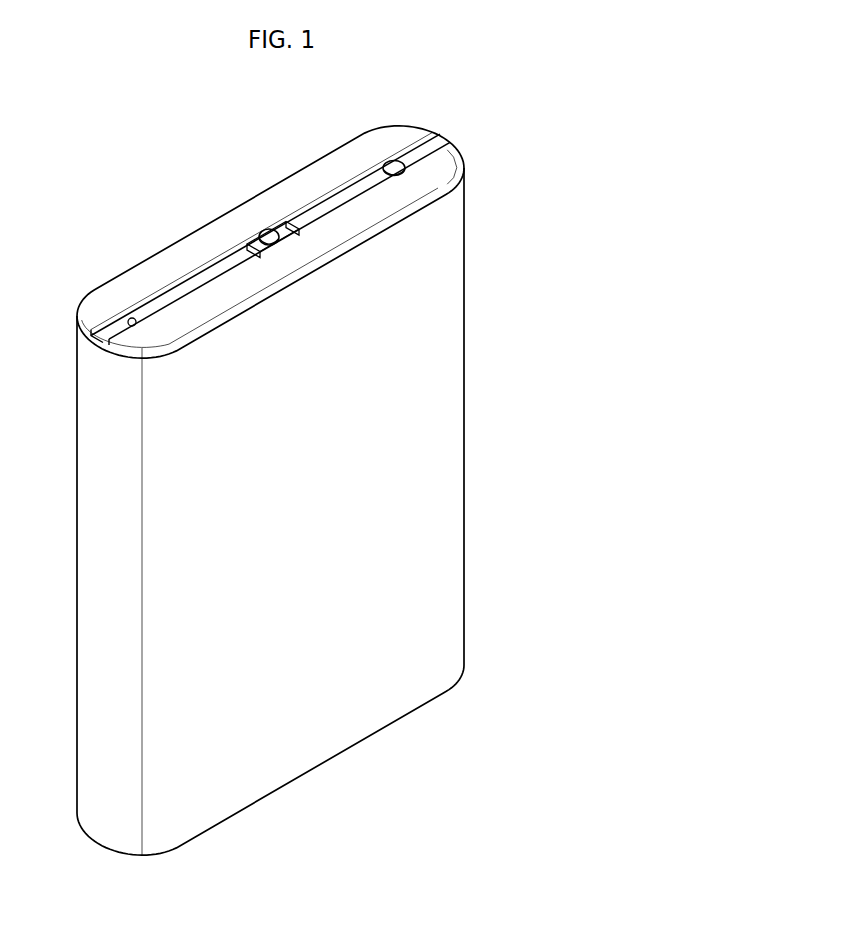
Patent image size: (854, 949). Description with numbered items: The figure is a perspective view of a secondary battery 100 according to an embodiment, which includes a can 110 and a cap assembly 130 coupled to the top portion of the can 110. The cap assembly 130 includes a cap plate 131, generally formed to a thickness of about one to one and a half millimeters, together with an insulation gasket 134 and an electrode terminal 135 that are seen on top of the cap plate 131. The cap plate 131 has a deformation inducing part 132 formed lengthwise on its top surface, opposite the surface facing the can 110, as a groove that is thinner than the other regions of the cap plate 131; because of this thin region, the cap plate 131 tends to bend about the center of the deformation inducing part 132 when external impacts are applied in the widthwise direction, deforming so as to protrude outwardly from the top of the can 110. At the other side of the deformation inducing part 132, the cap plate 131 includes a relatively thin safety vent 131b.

The secondary battery 100 is at (71, 120).
The can 110 is at (470, 325).
The cap assembly 130 is at (150, 246).
The cap plate 131 is at (414, 155).
The safety vent 131b is at (393, 165).
The deformation inducing part 132 is at (129, 318).
The insulation gasket 134 is at (255, 242).
The electrode terminal 135 is at (270, 230).